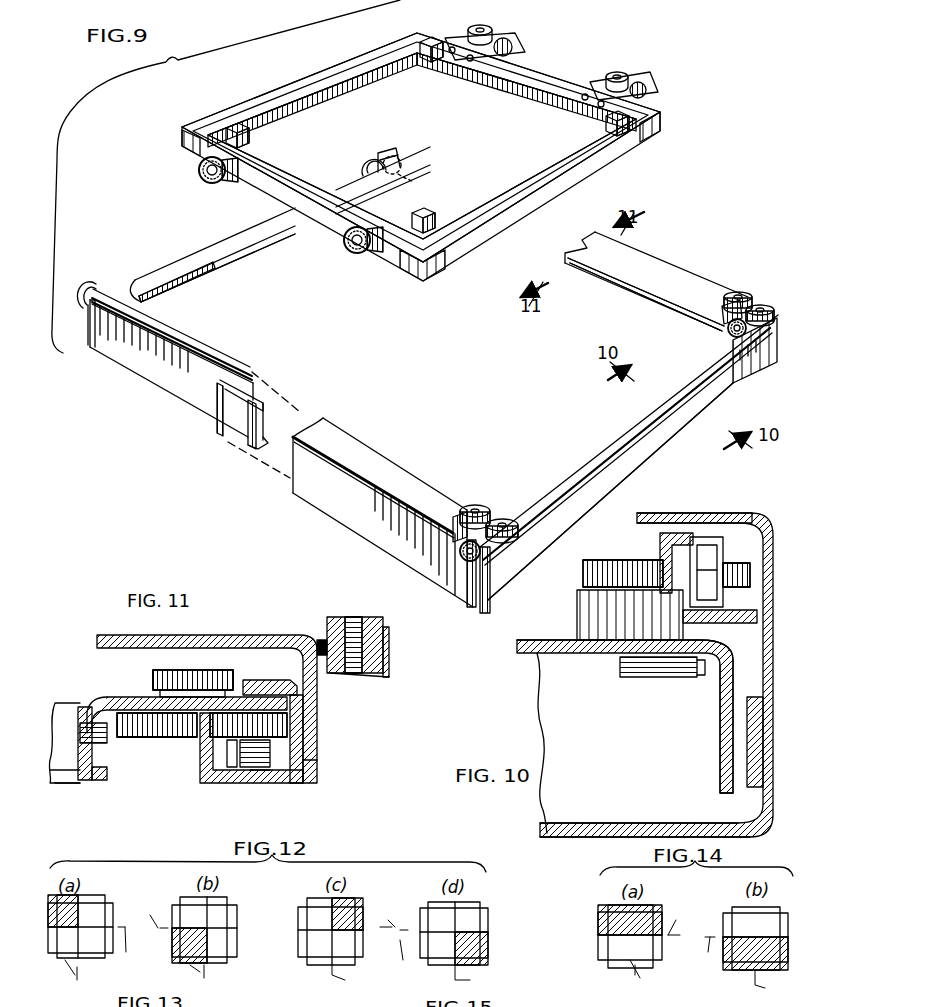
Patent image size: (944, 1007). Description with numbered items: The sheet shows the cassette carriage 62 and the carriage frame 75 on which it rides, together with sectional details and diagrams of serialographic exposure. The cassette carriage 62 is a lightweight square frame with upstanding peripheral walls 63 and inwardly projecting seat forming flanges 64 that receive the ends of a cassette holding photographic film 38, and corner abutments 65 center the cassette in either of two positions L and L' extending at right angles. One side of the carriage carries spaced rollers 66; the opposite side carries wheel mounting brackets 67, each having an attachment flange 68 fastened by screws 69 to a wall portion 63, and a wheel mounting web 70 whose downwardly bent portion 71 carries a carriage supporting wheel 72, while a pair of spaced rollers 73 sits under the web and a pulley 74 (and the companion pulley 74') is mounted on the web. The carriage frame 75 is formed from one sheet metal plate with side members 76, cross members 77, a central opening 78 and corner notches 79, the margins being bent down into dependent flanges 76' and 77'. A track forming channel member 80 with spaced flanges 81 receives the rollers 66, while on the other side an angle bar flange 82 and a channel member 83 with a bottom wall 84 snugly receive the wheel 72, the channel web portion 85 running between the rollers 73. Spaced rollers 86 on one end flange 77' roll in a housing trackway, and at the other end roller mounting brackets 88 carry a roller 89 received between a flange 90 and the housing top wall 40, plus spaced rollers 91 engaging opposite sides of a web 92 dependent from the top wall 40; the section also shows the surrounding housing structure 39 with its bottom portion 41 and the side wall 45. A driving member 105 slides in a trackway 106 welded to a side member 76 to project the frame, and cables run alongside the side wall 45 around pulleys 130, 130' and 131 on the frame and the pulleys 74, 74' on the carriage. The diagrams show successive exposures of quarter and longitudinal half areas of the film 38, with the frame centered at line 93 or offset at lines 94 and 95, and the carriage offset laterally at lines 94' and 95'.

In FIG. 9, the cassette carriage 62 is at (180, 158).
In FIG. 9, the upstanding peripheral walls 63 is at (306, 74).
In FIG. 11, the upstanding peripheral walls 63 is at (90, 706).
In FIG. 9, the seat forming flanges 64 is at (309, 97).
In FIG. 11, the seat forming flanges 64 is at (65, 781).
In FIG. 9, the abutments 65 is at (430, 40).
In FIG. 9, the rollers 66 is at (205, 178).
In FIG. 11, the wheel mounting brackets 67 is at (112, 682).
In FIG. 11, the attachment flange 68 is at (104, 757).
In FIG. 11, the fastening screws 69 is at (62, 712).
In FIG. 9, the wheel mounting web 70 is at (458, 36).
In FIG. 11, the wheel mounting web 70 is at (122, 697).
In FIG. 11, the wheel mounting flange 71 is at (230, 762).
In FIG. 9, the carriage supporting wheel 72 is at (510, 45).
In FIG. 11, the carriage supporting wheel 72 is at (262, 779).
In FIG. 9, the rollers 73 is at (655, 92).
In FIG. 11, the rollers 73 is at (147, 726).
In FIG. 9, the pulley 74 is at (490, 22).
In FIG. 11, the pulley 74 is at (193, 653).
In FIG. 9, the pulley 74' is at (620, 61).
In FIG. 9, the carriage frame 75 is at (171, 375).
In FIG. 10, the carriage frame 75 is at (744, 673).
In FIG. 9, the side members 76 is at (520, 419).
In FIG. 11, the side members 76 is at (212, 694).
In FIG. 9, the dependent flange 76' is at (369, 485).
In FIG. 11, the dependent flange 76' is at (335, 747).
In FIG. 9, the cross members 77 is at (454, 373).
In FIG. 10, the cross members 77 is at (625, 716).
In FIG. 9, the dependent flange 77' is at (436, 417).
In FIG. 10, the dependent flange 77' is at (705, 729).
In FIG. 9, the central opening 78 is at (212, 341).
In FIG. 9, the corner notches 79 is at (392, 147).
In FIG. 9, the track forming channel member 80 is at (238, 434).
In FIG. 9, the spaced flanges 81 is at (262, 437).
In FIG. 11, the flange 82 is at (258, 680).
In FIG. 11, the channel member 83 is at (208, 750).
In FIG. 11, the bottom wall 84 is at (253, 773).
In FIG. 9, the web portion 85 is at (612, 293).
In FIG. 9, the rollers 86 is at (368, 150).
In FIG. 9, the roller mounting brackets 88 is at (722, 312).
In FIG. 10, the roller mounting brackets 88 is at (590, 615).
In FIG. 9, the roller 89 is at (760, 328).
In FIG. 10, the roller 89 is at (706, 540).
In FIG. 10, the flange 90 is at (718, 624).
In FIG. 9, the rollers 91 is at (762, 304).
In FIG. 10, the rollers 91 is at (612, 565).
In FIG. 10, the web 92 is at (665, 548).
In FIG. 14, the line indicating centered position 93 is at (710, 983).
In FIG. 12, the line indicating offset position 94 is at (413, 979).
In FIG. 12, the line indicating offset position 94' is at (279, 931).
In FIG. 14, the line indicating offset position 94' is at (707, 953).
In FIG. 12, the line indicating offset position 95 is at (122, 983).
In FIG. 12, the line indicating offset position 95' is at (265, 924).
In FIG. 14, the line indicating offset position 95' is at (684, 915).
In FIG. 11, the driving member 105 is at (383, 652).
In FIG. 11, the trackway 106 is at (380, 674).
In FIG. 9, the pulley 130 is at (420, 145).
In FIG. 10, the pulley 130' is at (662, 685).
In FIG. 9, the pulley 131 is at (402, 173).
In FIG. 12, the photographic film 38 is at (57, 957).
In FIG. 14, the photographic film 38 is at (655, 955).
In FIG. 10, the housing 39 is at (768, 822).
In FIG. 10, the top wall 40 is at (660, 513).
In FIG. 10, the bottom plate 41 is at (600, 831).
In FIG. 10, the side wall 45 is at (763, 745).
In FIG. 12, the cassette position L is at (261, 931).
In FIG. 14, the cassette position L is at (712, 933).
In FIG. 12, the cassette position L' is at (262, 936).
In FIG. 14, the cassette position L' is at (644, 932).